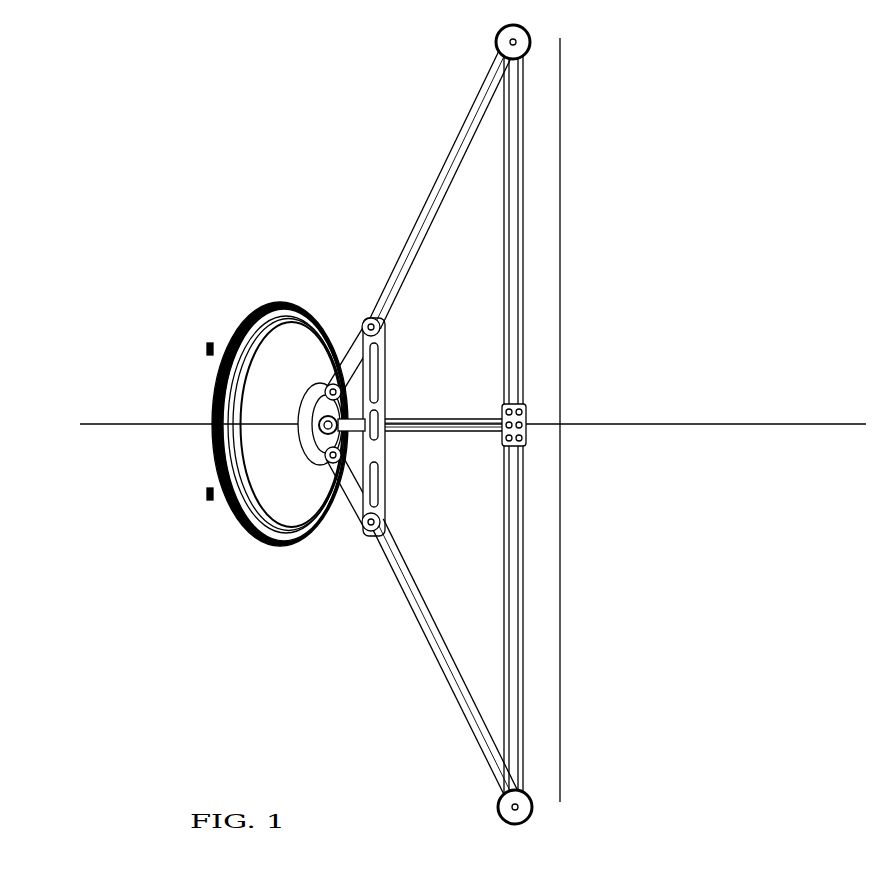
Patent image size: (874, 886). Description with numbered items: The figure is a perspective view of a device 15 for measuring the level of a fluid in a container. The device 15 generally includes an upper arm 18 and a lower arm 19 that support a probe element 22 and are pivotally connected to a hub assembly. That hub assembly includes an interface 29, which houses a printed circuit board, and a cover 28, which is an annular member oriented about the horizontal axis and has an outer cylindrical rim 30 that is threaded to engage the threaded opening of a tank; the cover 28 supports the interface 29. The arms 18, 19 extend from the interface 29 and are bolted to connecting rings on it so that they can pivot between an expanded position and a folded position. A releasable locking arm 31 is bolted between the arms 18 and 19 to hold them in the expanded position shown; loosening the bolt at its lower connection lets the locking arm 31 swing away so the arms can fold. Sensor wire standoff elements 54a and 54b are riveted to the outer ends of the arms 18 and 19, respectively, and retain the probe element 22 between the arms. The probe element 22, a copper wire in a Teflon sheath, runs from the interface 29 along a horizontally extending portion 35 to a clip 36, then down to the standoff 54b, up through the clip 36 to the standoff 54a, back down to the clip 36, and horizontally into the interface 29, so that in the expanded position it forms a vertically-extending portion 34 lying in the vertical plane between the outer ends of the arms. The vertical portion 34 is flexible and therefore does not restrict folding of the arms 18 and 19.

The device for measuring the level of a fluid 15 is at (160, 176).
The arm 18 is at (425, 205).
The arm 19 is at (411, 608).
The probe element 22 is at (612, 314).
The cover 28 is at (218, 345).
The interface 29 is at (343, 487).
The outer cylindrical rim 30 is at (228, 512).
The releasable locking arm 31 is at (383, 392).
The vertically-extending portion 34 is at (530, 205).
The horizontally extending portion 35 is at (438, 437).
The clip 36 is at (528, 407).
The sensor wire standoff element 54a is at (497, 32).
The sensor wire standoff element 54b is at (497, 812).